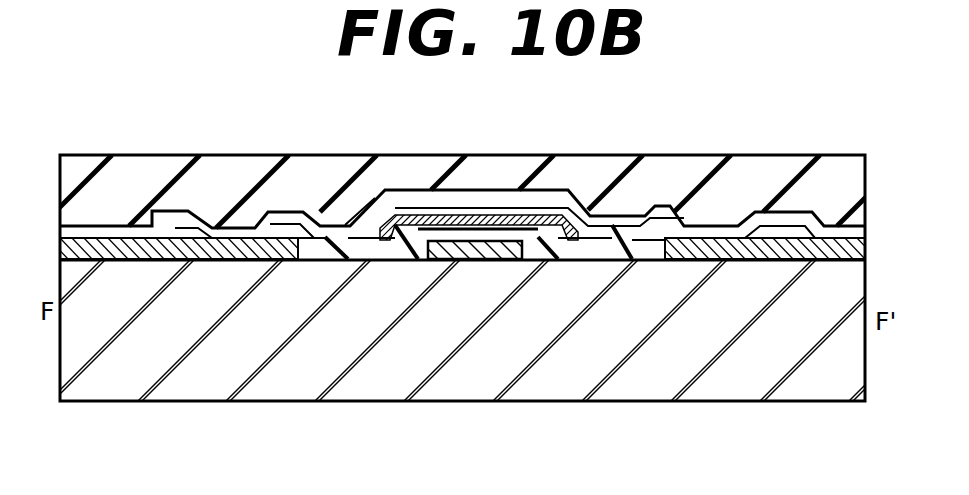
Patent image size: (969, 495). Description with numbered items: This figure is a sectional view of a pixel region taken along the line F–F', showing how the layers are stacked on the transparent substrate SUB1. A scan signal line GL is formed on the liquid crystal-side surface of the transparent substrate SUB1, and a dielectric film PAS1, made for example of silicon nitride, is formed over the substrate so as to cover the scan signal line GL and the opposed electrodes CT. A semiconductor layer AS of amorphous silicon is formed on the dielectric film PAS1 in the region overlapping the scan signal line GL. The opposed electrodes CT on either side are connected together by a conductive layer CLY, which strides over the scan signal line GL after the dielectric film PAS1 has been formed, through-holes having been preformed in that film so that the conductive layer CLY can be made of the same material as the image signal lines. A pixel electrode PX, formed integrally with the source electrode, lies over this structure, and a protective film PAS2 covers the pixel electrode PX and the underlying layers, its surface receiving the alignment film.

The pixel electrode PX is at (462, 170).
The semiconductor layer AS is at (388, 213).
The conductive layer CLY is at (500, 203).
The protective film PAS2 is at (772, 168).
The dielectric film PAS1 is at (591, 253).
The opposed electrode CT is at (208, 259).
The scan signal line GL is at (473, 256).
The transparent substrate SUB1 is at (484, 330).